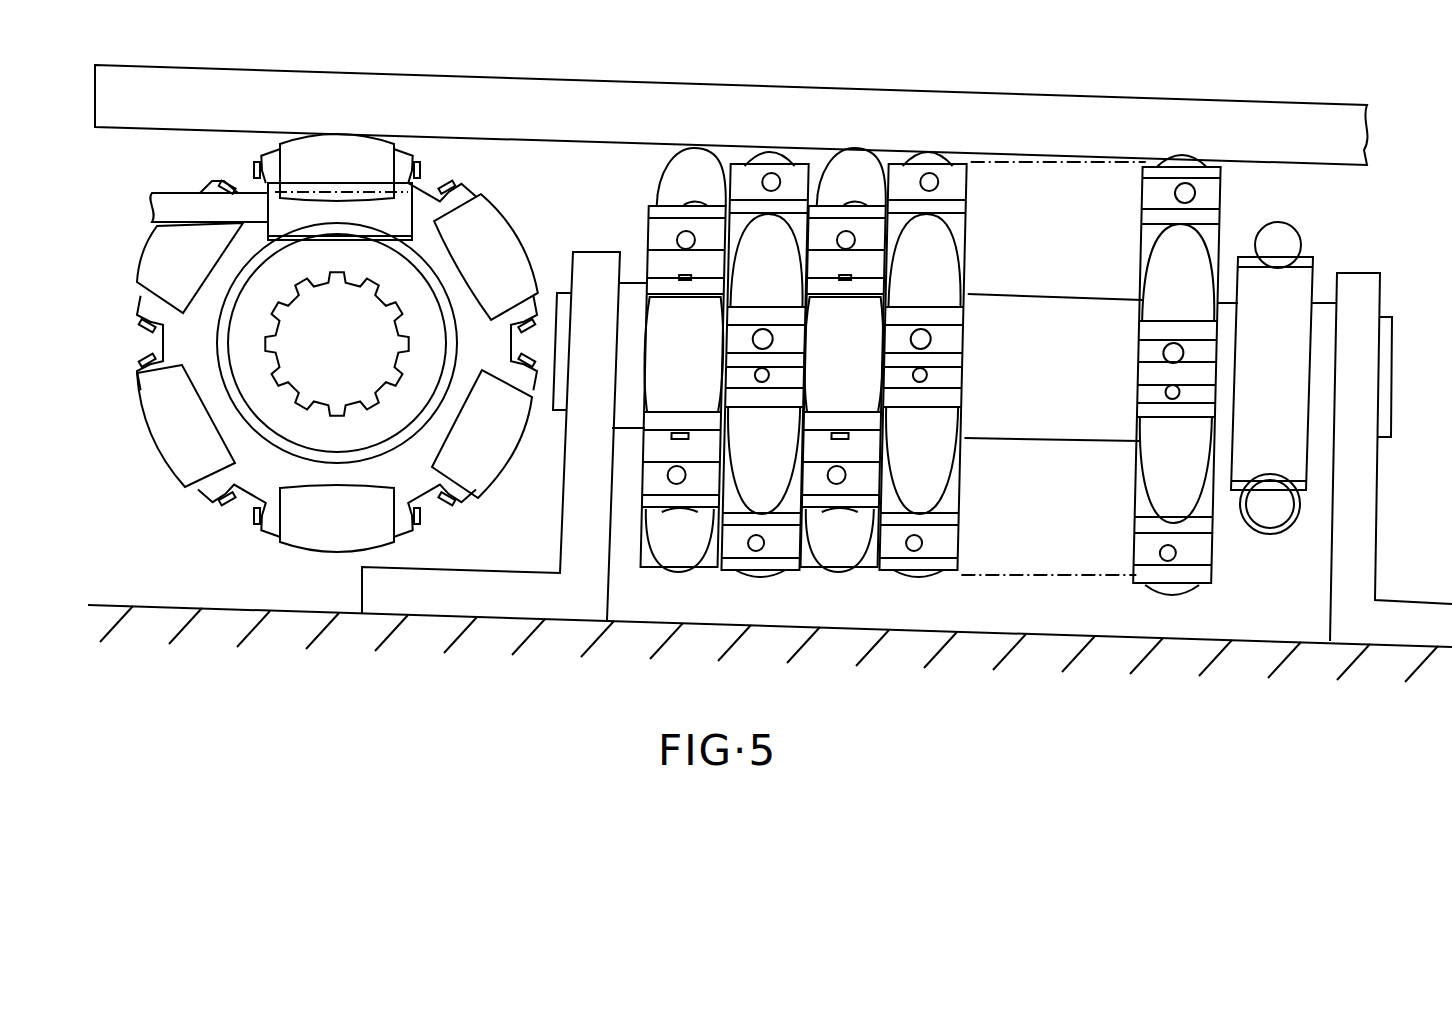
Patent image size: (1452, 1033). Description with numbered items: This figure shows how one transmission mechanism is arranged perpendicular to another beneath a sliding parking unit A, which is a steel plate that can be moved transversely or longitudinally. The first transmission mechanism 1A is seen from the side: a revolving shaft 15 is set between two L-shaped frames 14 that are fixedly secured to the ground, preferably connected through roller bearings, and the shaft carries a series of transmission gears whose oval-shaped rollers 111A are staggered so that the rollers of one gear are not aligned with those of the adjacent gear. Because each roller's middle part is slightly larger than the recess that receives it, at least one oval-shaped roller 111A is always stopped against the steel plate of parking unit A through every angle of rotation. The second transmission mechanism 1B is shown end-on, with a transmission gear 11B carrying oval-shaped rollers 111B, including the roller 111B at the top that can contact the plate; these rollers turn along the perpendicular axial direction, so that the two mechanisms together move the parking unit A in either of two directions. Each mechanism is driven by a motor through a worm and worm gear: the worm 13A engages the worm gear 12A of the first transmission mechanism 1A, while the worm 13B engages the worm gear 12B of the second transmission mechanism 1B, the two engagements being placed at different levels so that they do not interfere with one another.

The parking unit A is at (662, 97).
The first transmission mechanism 1A is at (1004, 354).
The second transmission mechanism 1B is at (357, 325).
The transmission gear 11B is at (425, 210).
The oval-shaped roller 111A is at (690, 172).
The oval-shaped roller 111B is at (347, 158).
The worm gear 12A is at (1308, 280).
The worm gear 12B is at (378, 427).
The worm 13A is at (1272, 534).
The worm 13B is at (158, 203).
The L-shaped frame 14 is at (515, 580).
The revolving shaft 15 is at (1020, 428).